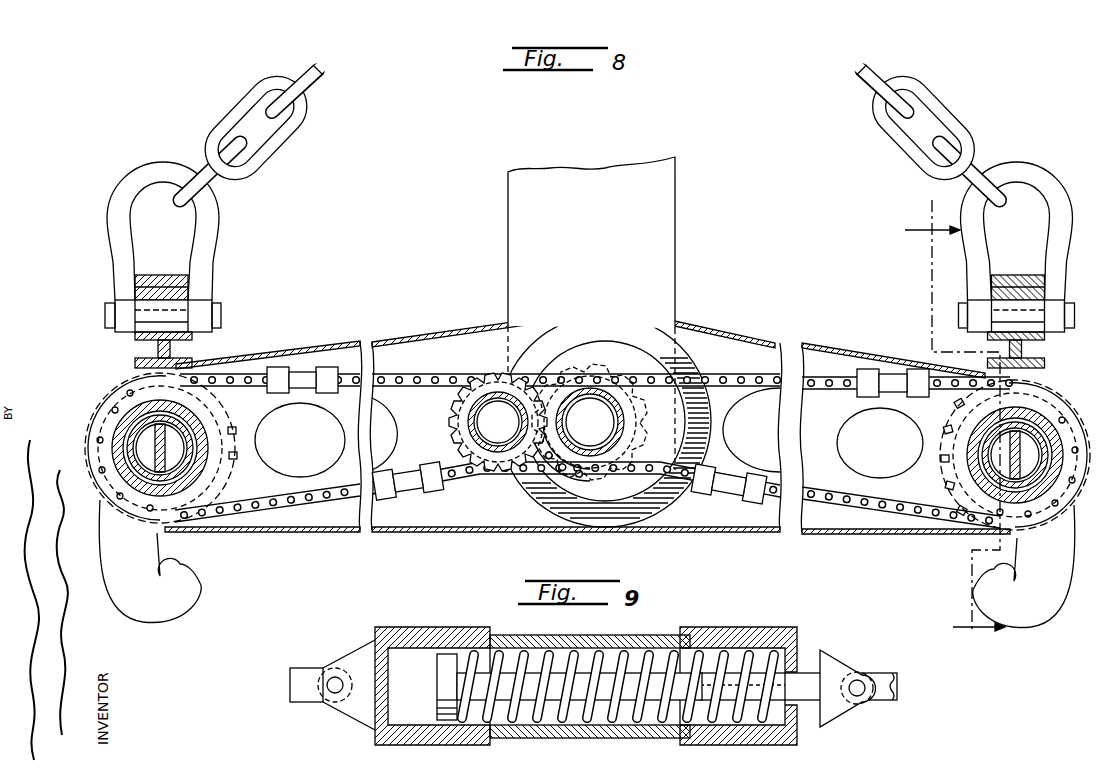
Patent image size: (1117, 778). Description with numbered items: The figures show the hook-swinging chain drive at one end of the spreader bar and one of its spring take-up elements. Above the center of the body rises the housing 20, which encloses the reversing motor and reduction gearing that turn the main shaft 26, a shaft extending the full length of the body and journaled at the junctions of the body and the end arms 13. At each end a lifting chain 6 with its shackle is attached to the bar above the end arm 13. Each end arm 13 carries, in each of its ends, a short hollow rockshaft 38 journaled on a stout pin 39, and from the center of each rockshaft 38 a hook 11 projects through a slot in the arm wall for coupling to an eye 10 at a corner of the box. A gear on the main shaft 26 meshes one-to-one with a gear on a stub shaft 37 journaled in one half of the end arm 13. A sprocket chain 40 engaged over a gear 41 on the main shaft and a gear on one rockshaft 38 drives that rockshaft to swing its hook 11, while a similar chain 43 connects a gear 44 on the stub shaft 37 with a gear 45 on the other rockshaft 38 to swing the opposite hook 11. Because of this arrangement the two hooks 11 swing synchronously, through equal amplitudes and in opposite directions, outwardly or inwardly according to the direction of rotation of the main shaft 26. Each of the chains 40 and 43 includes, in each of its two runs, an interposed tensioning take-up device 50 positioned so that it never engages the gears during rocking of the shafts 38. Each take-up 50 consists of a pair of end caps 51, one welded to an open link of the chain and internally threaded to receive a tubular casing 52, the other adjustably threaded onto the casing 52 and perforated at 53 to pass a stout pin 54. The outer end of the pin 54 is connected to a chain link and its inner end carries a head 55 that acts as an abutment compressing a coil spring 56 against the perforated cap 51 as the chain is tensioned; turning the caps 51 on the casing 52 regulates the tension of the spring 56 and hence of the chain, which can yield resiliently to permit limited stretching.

In FIG. 8, the chain 6 is at (315, 68).
In FIG. 8, the eye or equivalent connecting element 10 is at (955, 425).
In FIG. 8, the hook 11 is at (171, 617).
In FIG. 8, the end arm 13 is at (714, 333).
In FIG. 8, the housing 20 is at (677, 228).
In FIG. 8, the main shaft 26 is at (587, 416).
In FIG. 8, the stub shaft 37 is at (485, 412).
In FIG. 8, the rockshaft 38 is at (123, 427).
In FIG. 8, the pin 39 is at (167, 455).
In FIG. 8, the sprocket chain 40 is at (822, 386).
In FIG. 8, the gear 41 is at (609, 400).
In FIG. 8, the chain 43 is at (493, 477).
In FIG. 8, the gear 44 is at (456, 399).
In FIG. 8, the gear 45 is at (213, 405).
In FIG. 8, the tensioning take-up device 50 is at (327, 375).
In FIG. 9, the tensioning take-up device 50 is at (670, 612).
In FIG. 9, the end cap 51 is at (421, 628).
In FIG. 9, the tubular casing 52 is at (602, 641).
In FIG. 9, the perforation 53 is at (800, 668).
In FIG. 9, the pin 54 is at (802, 705).
In FIG. 9, the head 55 is at (447, 683).
In FIG. 9, the coil spring 56 is at (549, 660).